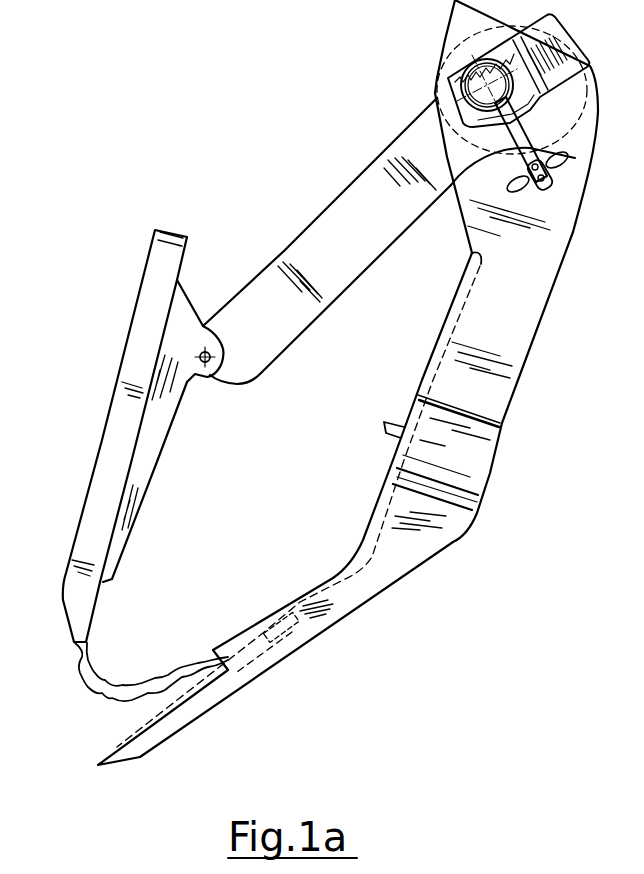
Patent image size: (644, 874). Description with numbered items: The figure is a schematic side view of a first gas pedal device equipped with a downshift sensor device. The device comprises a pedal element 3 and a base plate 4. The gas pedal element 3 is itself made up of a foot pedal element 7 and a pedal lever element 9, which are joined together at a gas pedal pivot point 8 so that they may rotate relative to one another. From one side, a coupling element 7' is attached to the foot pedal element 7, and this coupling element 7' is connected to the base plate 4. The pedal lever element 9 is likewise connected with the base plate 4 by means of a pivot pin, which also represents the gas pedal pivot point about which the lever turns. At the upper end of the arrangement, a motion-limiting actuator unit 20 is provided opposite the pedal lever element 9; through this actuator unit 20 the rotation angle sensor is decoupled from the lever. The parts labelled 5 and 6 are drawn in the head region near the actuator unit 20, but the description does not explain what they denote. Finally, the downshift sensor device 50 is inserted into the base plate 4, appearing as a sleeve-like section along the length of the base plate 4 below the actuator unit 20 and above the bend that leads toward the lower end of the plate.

The pedal element 3 is at (311, 136).
The base plate 4 is at (378, 590).
The clamping screw 5 is at (591, 152).
The clamping nut 6 is at (569, 146).
The foot pedal element 7 is at (125, 436).
The coupling element 7' is at (146, 688).
The gas pedal pivot point 8 is at (206, 378).
The pedal lever element 9 is at (285, 250).
The motion-limiting actuator unit 20 is at (456, 203).
The downshift sensor device 50 is at (476, 493).